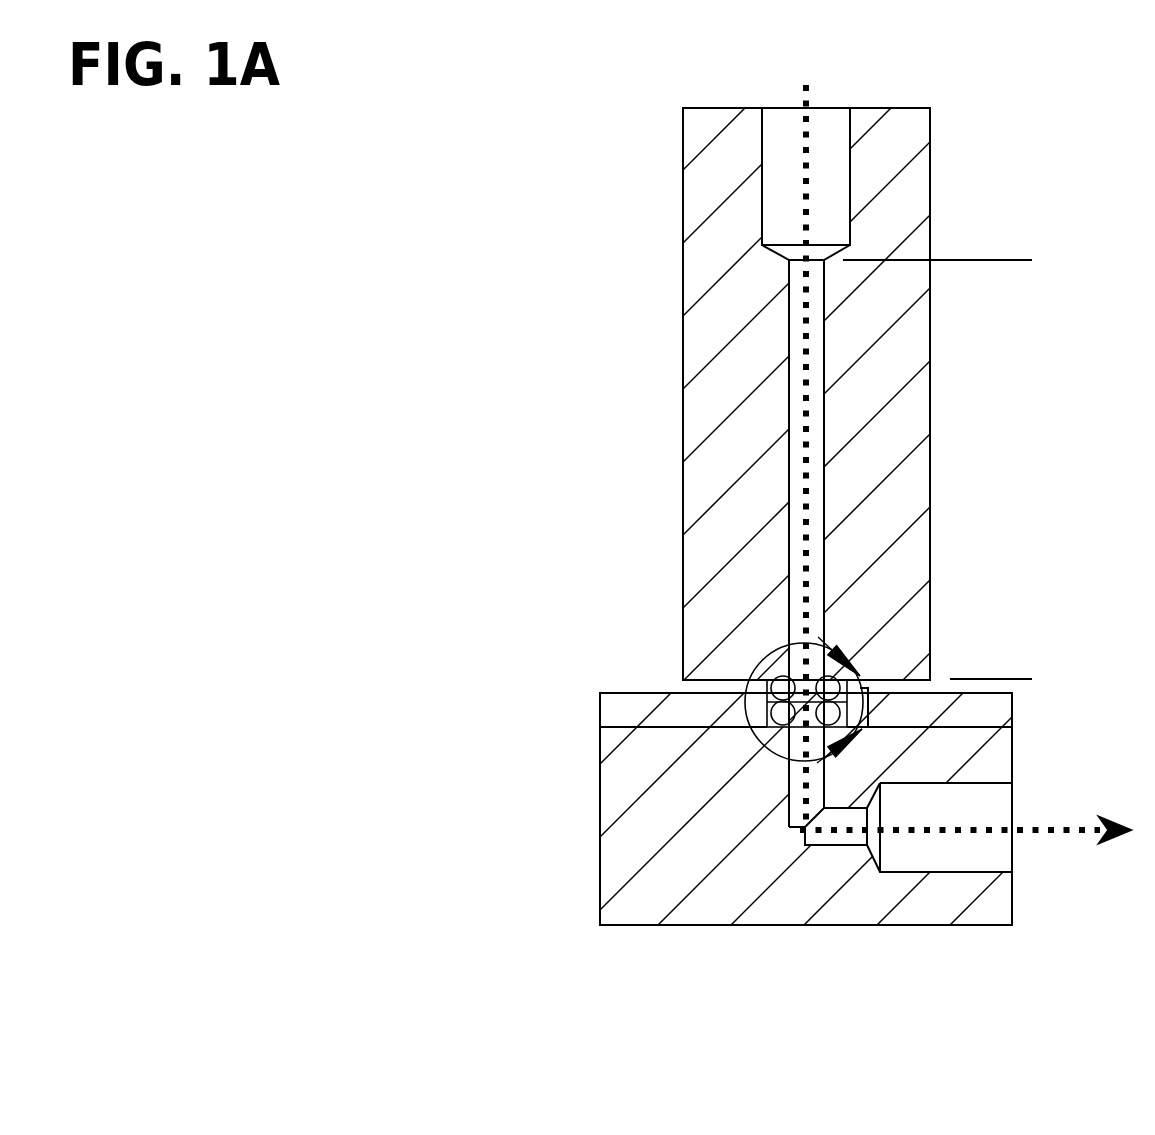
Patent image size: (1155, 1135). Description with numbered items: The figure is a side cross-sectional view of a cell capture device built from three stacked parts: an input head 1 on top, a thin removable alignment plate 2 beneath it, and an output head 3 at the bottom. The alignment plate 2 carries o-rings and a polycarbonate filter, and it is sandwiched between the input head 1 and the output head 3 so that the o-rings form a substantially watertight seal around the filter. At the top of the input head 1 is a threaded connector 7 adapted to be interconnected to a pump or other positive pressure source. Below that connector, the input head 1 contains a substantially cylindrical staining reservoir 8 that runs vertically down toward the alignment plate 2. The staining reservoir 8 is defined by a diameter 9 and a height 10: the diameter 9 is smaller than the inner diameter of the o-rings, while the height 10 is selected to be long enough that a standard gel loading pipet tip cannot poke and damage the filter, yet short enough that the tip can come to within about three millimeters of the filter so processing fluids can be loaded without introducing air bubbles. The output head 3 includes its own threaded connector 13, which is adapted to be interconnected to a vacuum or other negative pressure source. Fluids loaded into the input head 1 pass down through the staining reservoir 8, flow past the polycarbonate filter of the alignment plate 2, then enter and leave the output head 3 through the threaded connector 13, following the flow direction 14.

The input head 1 is at (664, 394).
The alignment plate 2 is at (600, 692).
The output head 3 is at (760, 809).
The threaded connector 7 is at (888, 184).
The staining reservoir 8 is at (702, 537).
The diameter 9 is at (930, 426).
The height 10 is at (978, 261).
The threaded connector 13 is at (980, 872).
The flow direction 14 is at (966, 803).